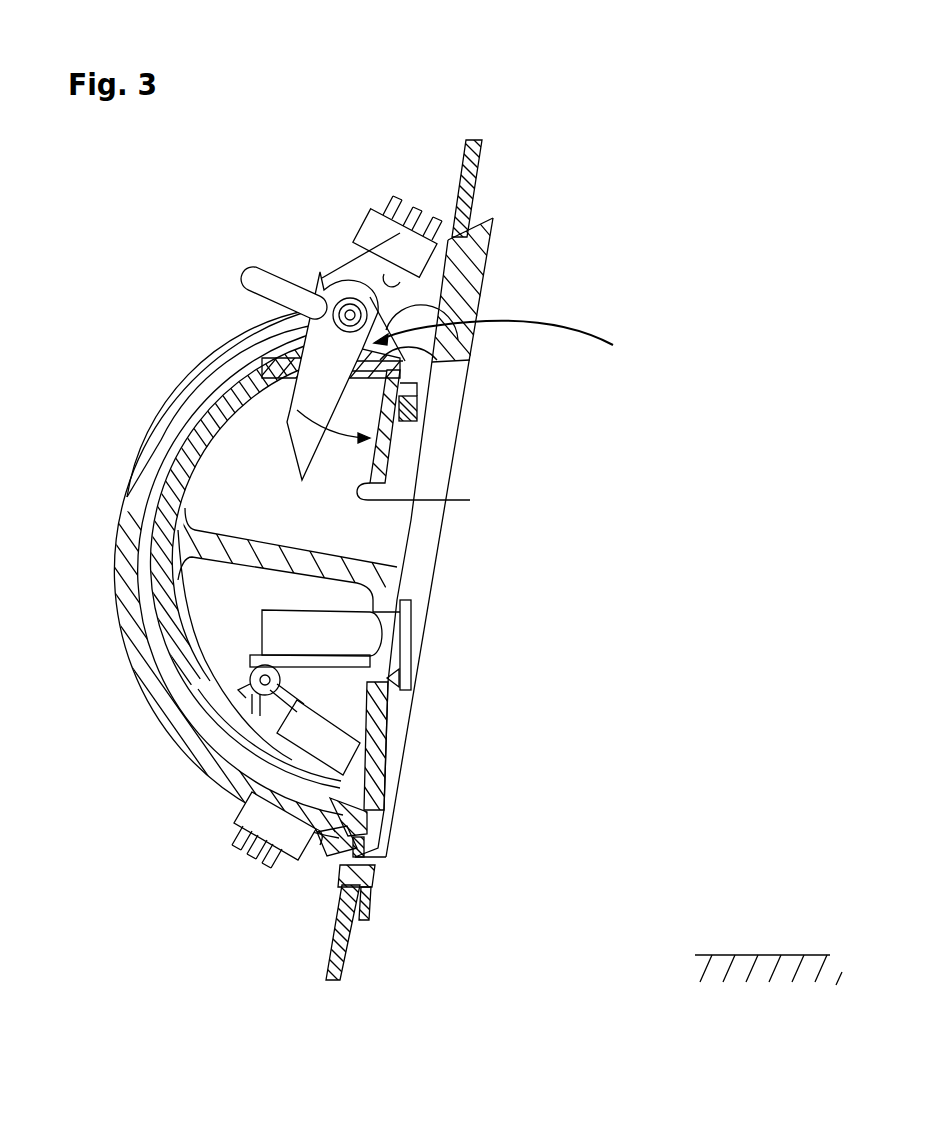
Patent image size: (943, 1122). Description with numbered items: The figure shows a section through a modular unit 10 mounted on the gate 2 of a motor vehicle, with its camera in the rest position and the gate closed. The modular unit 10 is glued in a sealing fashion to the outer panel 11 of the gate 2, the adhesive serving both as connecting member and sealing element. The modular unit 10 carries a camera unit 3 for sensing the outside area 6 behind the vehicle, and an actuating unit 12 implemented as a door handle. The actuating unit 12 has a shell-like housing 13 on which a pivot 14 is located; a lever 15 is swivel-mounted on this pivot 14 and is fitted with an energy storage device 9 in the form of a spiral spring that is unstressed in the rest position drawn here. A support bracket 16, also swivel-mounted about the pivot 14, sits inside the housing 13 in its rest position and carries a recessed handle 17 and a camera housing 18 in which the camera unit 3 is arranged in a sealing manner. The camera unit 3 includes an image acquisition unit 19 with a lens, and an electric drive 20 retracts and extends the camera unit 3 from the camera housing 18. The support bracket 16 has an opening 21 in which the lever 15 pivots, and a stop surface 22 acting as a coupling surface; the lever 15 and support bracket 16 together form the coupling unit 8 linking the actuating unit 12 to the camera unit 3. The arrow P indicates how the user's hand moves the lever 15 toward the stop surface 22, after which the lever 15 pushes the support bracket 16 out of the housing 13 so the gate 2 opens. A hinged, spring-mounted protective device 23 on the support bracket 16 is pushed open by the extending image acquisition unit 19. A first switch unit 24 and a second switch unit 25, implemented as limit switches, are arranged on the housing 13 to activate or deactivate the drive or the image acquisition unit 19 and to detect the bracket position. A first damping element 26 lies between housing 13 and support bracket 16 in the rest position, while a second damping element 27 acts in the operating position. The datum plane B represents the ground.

The gate 2 is at (474, 188).
The camera unit 3 is at (350, 643).
The outside area 6 is at (612, 543).
The coupling unit 8 is at (502, 340).
The energy storage device 9 is at (322, 278).
The modular unit 10 is at (228, 232).
The outer panel 11 is at (482, 160).
The actuating unit 12 is at (508, 304).
The housing 13 is at (128, 535).
The pivot 14 is at (342, 298).
The lever 15 is at (318, 408).
The support bracket 16 is at (175, 640).
The recessed handle 17 is at (373, 535).
The camera housing 18 is at (190, 602).
The image acquisition unit 19 is at (400, 670).
The electric drive 20 is at (337, 753).
The opening 21 is at (440, 372).
The stop surface 22 is at (425, 421).
The protective device 23 is at (415, 606).
The first switch unit 24 is at (248, 829).
The second switch unit 25 is at (372, 223).
The first damping element 26 is at (362, 862).
The second damping element 27 is at (419, 412).
The arrow P is at (331, 440).
The datum plane B is at (735, 955).